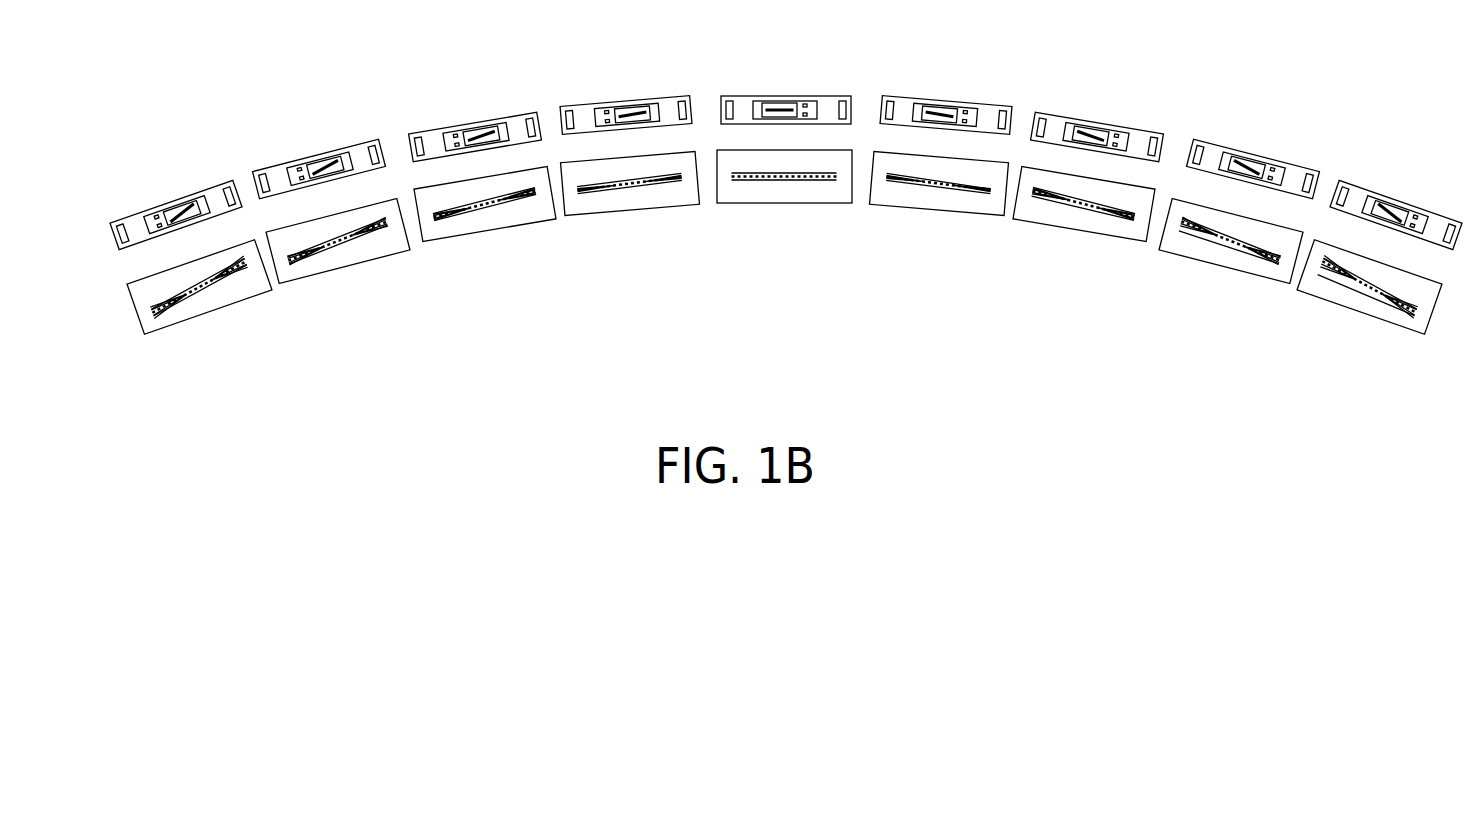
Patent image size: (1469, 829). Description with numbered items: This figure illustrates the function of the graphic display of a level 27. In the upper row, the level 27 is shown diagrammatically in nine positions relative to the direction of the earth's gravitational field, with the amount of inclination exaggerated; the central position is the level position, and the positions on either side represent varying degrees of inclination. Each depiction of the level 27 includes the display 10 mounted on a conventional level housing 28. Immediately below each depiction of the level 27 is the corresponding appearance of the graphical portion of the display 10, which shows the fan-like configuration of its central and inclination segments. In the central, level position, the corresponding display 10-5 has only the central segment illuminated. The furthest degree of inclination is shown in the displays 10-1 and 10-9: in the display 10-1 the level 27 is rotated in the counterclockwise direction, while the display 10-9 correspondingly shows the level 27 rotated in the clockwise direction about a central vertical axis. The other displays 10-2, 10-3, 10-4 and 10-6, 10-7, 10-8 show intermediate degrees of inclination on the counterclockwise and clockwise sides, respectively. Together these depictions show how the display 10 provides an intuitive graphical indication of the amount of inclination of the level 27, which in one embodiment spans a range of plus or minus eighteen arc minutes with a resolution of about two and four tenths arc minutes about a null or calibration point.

The level 27 is at (168, 150).
The level housing 28 is at (222, 212).
The display 10 is at (150, 228).
The display 10-1 is at (195, 318).
The display 10-2 is at (342, 270).
The display 10-3 is at (483, 235).
The display 10-4 is at (627, 213).
The display 10-5 is at (770, 205).
The display 10-6 is at (950, 212).
The display 10-7 is at (1093, 235).
The display 10-8 is at (1232, 269).
The display 10-9 is at (1370, 316).